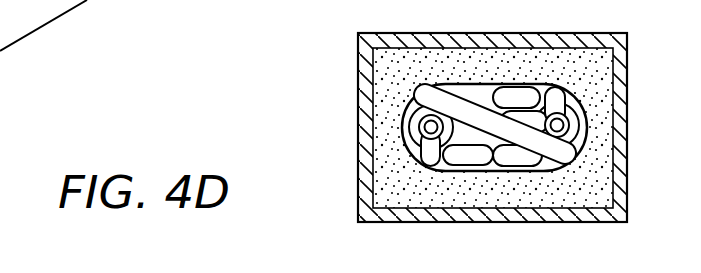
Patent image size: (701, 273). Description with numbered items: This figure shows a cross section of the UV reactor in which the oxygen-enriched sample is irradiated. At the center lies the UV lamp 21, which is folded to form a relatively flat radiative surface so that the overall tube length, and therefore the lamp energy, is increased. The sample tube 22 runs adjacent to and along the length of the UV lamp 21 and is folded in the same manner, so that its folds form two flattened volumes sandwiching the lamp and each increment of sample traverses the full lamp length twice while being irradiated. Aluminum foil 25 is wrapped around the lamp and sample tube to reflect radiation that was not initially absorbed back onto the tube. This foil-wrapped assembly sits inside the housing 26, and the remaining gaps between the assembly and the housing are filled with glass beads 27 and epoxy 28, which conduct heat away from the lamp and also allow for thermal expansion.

The UV lamp 21 is at (414, 126).
The sample tube 22 is at (420, 143).
The aluminum foil 25 is at (403, 107).
The housing 26 is at (368, 74).
The glass beads 27 is at (437, 128).
The epoxy 28 is at (390, 186).